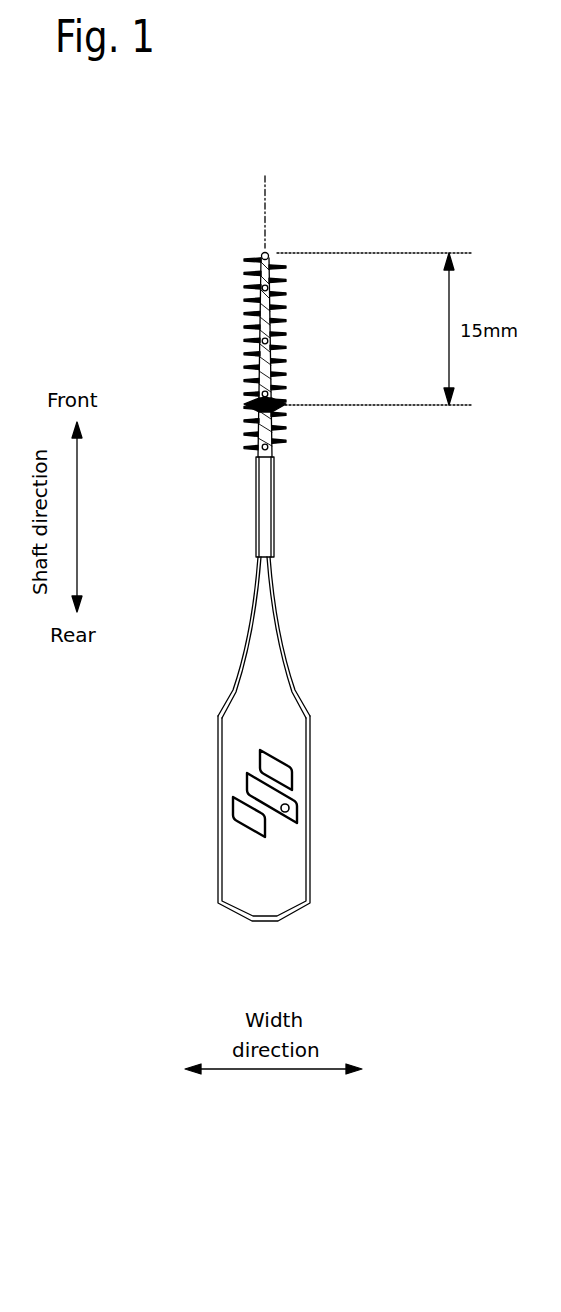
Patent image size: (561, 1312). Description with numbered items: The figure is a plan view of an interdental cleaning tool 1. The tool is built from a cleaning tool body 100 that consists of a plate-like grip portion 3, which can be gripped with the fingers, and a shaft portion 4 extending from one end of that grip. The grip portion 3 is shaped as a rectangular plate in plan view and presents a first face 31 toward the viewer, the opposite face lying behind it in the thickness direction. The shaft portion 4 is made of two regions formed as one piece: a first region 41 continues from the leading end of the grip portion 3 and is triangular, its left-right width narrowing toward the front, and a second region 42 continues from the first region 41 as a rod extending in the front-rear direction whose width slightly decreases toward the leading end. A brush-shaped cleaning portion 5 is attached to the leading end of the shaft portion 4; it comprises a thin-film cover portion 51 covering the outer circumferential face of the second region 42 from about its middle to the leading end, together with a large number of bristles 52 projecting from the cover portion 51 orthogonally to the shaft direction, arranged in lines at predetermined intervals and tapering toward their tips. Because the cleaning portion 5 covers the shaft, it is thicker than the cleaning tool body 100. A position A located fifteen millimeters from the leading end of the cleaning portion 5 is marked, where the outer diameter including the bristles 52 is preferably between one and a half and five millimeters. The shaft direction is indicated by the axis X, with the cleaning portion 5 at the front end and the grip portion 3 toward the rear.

The interdental cleaning tool 1 is at (185, 240).
The cleaning tool body 100 is at (252, 813).
The grip portion 3 is at (324, 813).
The first face 31 is at (277, 745).
The shaft portion 4 is at (324, 587).
The first region 41 is at (308, 637).
The second region 42 is at (265, 530).
The cleaning portion 5 is at (263, 356).
The cover portion 51 is at (247, 347).
The bristles 52 is at (244, 410).
The position A is at (290, 398).
The shaft axis X is at (263, 198).